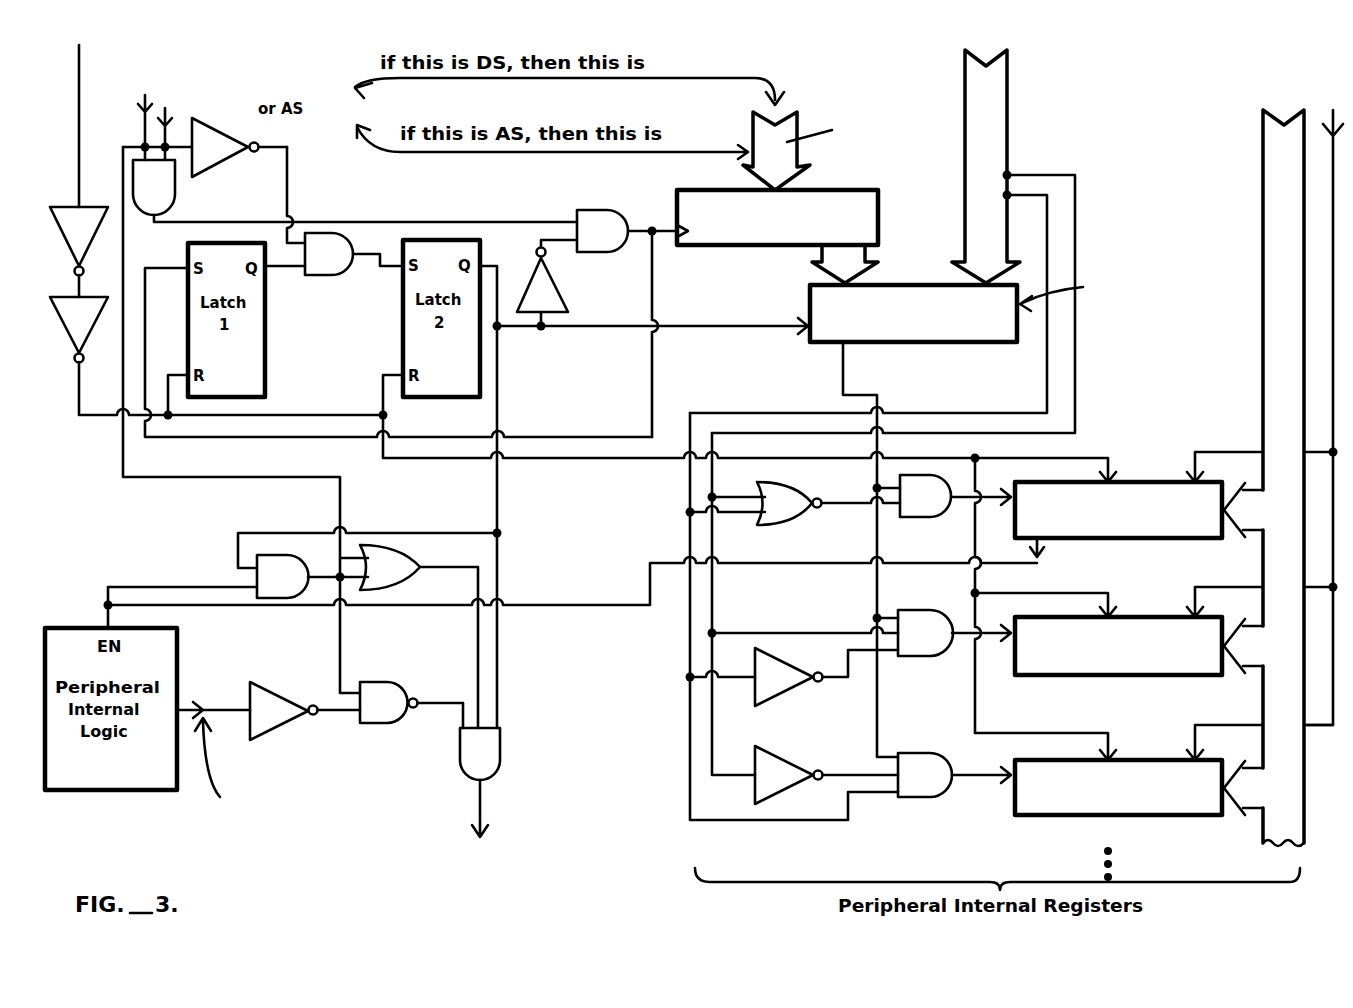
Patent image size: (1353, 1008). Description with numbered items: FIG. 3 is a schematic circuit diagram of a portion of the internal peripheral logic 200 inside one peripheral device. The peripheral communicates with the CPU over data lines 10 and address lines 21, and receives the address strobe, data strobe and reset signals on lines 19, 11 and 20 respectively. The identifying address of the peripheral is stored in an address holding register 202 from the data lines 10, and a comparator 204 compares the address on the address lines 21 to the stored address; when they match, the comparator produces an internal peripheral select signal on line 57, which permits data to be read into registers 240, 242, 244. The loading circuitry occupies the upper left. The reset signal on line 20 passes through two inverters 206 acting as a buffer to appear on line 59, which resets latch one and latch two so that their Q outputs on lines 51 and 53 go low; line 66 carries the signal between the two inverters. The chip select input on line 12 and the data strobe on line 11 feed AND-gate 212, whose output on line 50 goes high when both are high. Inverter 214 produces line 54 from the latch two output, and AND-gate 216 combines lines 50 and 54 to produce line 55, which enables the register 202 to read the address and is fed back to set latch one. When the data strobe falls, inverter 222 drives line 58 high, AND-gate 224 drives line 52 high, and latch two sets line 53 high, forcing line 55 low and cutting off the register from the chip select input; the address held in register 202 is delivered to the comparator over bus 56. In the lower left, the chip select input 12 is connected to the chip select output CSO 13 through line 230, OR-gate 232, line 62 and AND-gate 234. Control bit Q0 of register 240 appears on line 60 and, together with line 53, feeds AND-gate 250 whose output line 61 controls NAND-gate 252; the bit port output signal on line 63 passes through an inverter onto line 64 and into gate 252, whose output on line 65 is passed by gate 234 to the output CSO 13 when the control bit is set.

The data lines 10 is at (1278, 135).
The data strobe (DS) line 11 is at (754, 387).
The chip select input line 12 is at (130, 135).
The chip select output 13 is at (478, 810).
The address strobe (AS) line 19 is at (552, 118).
The reset line 20 is at (85, 125).
The address lines 21 is at (1037, 73).
The AND-gate 212 output line 50 is at (184, 230).
The latch 1 Q output line 51 is at (280, 268).
The AND-gate 224 output line 52 is at (385, 268).
The latch 2 Q output line 53 is at (497, 262).
The inverter 214 output line 54 is at (548, 255).
The AND-gate 216 output line 55 is at (658, 226).
The address holding register output bus 56 is at (815, 258).
The internal peripheral select signal line 57 is at (843, 374).
The inverter 222 output line 58 is at (287, 177).
The buffered reset signal line 59 is at (79, 403).
The control bit Q0 line 60 is at (125, 585).
The AND-gate 250 output line 61 is at (325, 580).
The OR-gate 232 output line 62 is at (424, 570).
The bit port output signal line 63 is at (205, 706).
The inverter output line 64 is at (320, 716).
The NAND-gate 252 output line 65 is at (426, 700).
The inverter interconnect line 66 is at (79, 286).
The internal peripheral logic 200 is at (843, 90).
The address holding register 202 is at (840, 190).
The comparator 204 is at (955, 283).
The inverters 206 is at (70, 252).
The AND-gate 212 is at (177, 190).
The inverter 214 is at (568, 303).
The AND-gate 216 is at (578, 212).
The inverter 222 is at (260, 141).
The AND-gate 224 is at (325, 277).
The line 230 is at (158, 478).
The OR-gate 232 is at (388, 545).
The AND-gate 234 is at (503, 740).
The register 0 240 is at (1180, 480).
The register 1 242 is at (1180, 615).
The register 2 244 is at (1180, 758).
The AND-gate 250 is at (285, 553).
The NAND-gate 252 is at (370, 682).